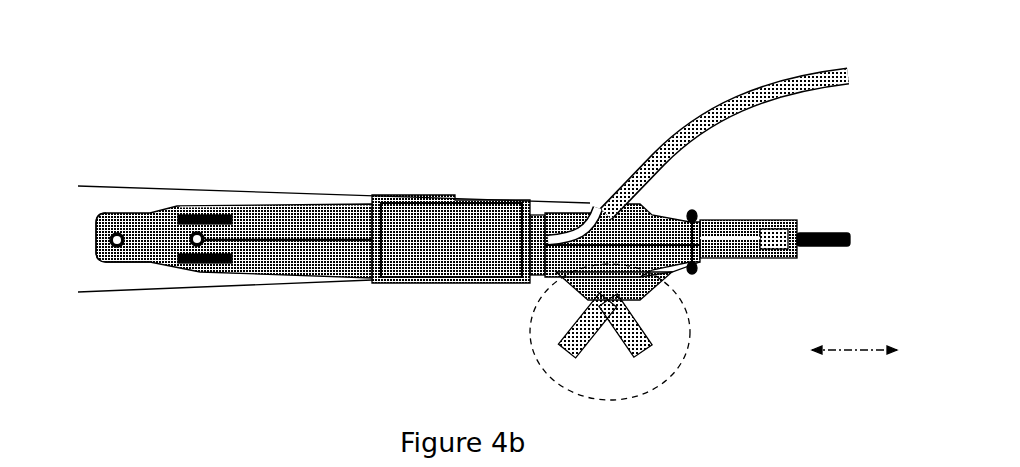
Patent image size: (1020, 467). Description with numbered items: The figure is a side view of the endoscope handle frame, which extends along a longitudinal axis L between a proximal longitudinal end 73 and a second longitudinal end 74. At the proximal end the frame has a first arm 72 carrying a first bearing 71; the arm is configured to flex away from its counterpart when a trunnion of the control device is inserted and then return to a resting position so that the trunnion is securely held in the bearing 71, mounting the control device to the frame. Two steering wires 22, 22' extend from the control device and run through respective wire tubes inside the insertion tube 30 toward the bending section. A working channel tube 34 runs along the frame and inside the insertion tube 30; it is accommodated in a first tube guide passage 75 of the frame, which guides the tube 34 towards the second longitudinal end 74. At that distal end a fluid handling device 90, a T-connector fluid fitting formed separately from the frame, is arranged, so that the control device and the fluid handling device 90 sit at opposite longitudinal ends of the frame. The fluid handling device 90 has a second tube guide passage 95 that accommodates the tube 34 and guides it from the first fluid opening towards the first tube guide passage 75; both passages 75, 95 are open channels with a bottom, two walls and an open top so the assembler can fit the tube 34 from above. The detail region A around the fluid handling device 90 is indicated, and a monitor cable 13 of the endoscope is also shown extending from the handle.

The monitor cable 13 is at (672, 132).
The steering wire 22 is at (225, 297).
The steering wire 22' is at (334, 137).
The insertion tube 30 is at (822, 232).
The working channel tube 34 is at (687, 257).
The first bearing 71 is at (127, 233).
The first arm 72 is at (163, 235).
The proximal longitudinal end 73 is at (97, 238).
The second longitudinal end 74 is at (806, 215).
The first tube guide passage 75 is at (688, 230).
The fluid handling device 90 is at (587, 300).
The second tube guide passage 95 is at (650, 287).
The detail area A is at (610, 341).
The longitudinal axis L is at (853, 352).